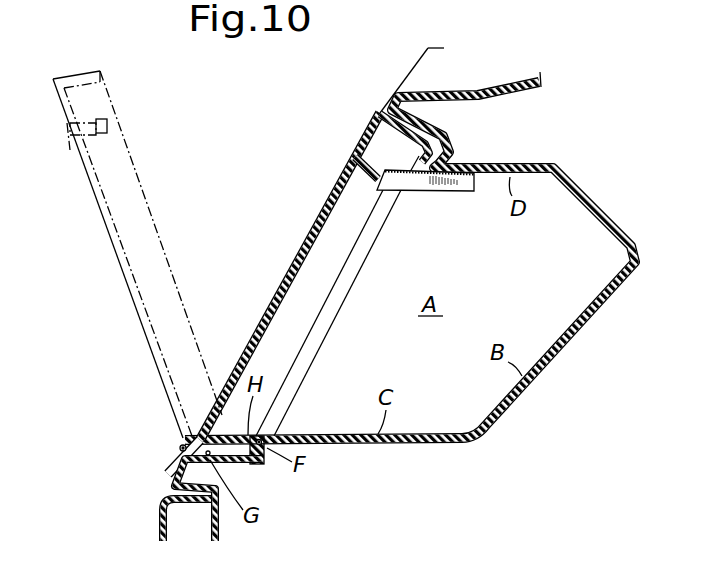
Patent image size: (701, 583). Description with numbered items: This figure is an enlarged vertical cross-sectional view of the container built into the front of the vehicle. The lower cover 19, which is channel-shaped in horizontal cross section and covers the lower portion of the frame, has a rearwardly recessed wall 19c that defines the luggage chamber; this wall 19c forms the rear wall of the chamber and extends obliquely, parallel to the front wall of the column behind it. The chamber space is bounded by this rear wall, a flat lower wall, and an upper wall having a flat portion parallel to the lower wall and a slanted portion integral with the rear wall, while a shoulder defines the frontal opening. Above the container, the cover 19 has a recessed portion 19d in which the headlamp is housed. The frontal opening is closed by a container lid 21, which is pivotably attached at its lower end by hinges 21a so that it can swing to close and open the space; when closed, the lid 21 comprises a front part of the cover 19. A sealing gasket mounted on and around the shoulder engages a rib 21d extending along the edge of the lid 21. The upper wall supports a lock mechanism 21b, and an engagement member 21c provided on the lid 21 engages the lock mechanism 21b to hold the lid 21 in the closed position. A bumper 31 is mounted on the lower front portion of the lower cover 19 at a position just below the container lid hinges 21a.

The lower cover 19 is at (392, 96).
The rearwardly recessed wall 19c is at (564, 347).
The recessed portion 19d is at (497, 85).
The container lid 21 is at (321, 208).
The hinges 21a is at (177, 460).
The lock mechanism 21b is at (420, 188).
The engagement member 21c is at (352, 163).
The rib 21d is at (417, 124).
The bumper 31 is at (160, 518).